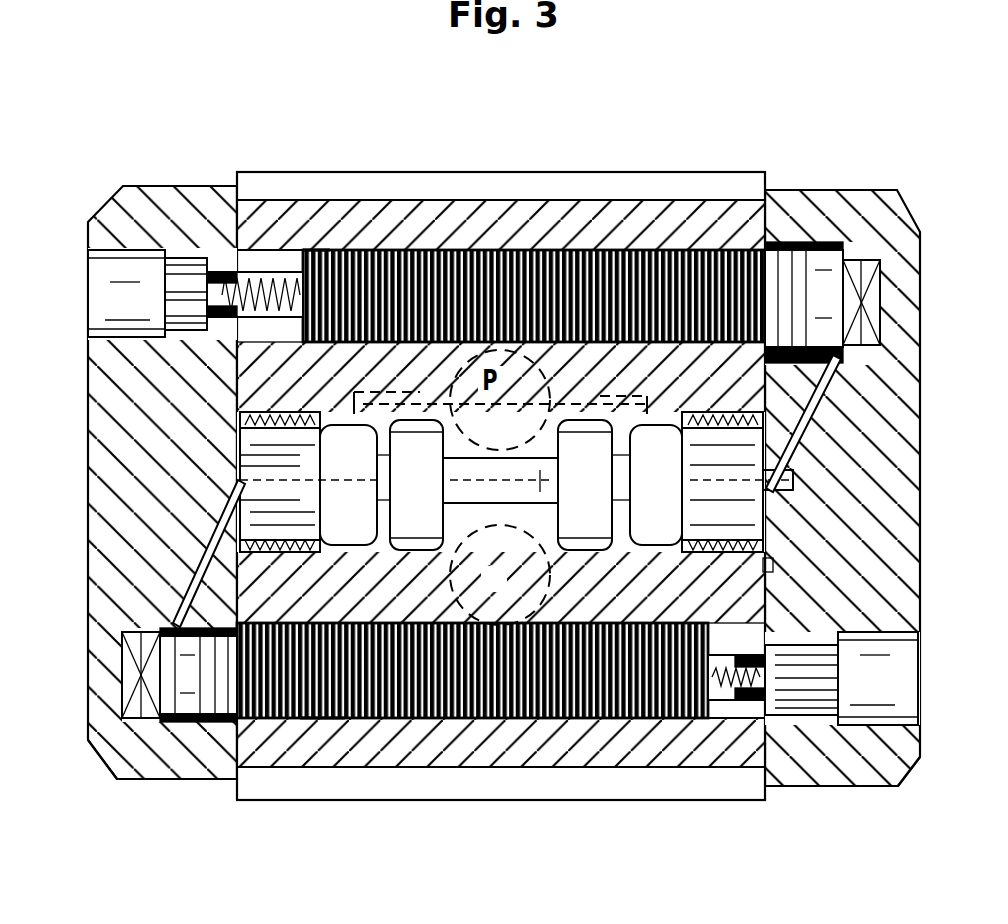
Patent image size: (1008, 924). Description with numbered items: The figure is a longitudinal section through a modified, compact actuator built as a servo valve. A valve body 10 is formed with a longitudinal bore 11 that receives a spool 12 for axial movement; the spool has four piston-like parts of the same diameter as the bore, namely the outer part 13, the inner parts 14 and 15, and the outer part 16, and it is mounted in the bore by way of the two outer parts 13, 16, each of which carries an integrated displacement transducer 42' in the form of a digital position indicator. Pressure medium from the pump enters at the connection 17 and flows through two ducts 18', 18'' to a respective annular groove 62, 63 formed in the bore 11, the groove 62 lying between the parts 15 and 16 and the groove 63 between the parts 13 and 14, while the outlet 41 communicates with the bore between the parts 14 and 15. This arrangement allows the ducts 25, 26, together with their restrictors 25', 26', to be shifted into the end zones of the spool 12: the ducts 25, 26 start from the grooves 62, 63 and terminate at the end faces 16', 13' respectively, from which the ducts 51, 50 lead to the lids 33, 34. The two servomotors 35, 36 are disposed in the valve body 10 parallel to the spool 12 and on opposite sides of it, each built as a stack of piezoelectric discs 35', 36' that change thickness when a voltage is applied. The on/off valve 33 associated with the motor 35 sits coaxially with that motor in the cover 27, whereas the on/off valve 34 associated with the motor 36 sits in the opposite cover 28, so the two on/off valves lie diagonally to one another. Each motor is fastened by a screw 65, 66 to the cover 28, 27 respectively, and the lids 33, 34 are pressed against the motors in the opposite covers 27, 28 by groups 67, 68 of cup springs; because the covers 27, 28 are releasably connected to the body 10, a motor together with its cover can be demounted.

The valve body 10 is at (553, 218).
The longitudinal bore 11 is at (523, 252).
The spool 12 is at (278, 428).
The outer piston part 13 is at (264, 473).
The end face 13' is at (240, 444).
The piston part 14 is at (408, 550).
The piston part 15 is at (612, 545).
The outer piston part 16 is at (722, 513).
The end face 16' is at (789, 577).
The connection 17 is at (552, 440).
The duct 18' is at (650, 388).
The duct 18'' is at (493, 383).
The duct 25 is at (740, 501).
The restrictor 25' is at (799, 496).
The duct 26 is at (282, 559).
The restrictor 26' is at (222, 521).
The cover 27 is at (888, 768).
The cover 28 is at (110, 752).
The on/off valve 33 is at (818, 250).
The on/off valve 34 is at (180, 724).
The servomotor 35 is at (534, 226).
The piezoelectric discs 35' is at (321, 183).
The servomotor 36 is at (472, 732).
The piezoelectric discs 36' is at (321, 801).
The outlet 41 is at (540, 578).
The displacement transducer 42' is at (222, 424).
The duct 50 is at (812, 412).
The duct 51 is at (195, 580).
The annular groove 62 is at (663, 540).
The annular groove 63 is at (338, 535).
The screw 65 is at (180, 250).
The screw 66 is at (822, 726).
The group of cup springs 67 is at (862, 262).
The group of cup springs 68 is at (125, 640).